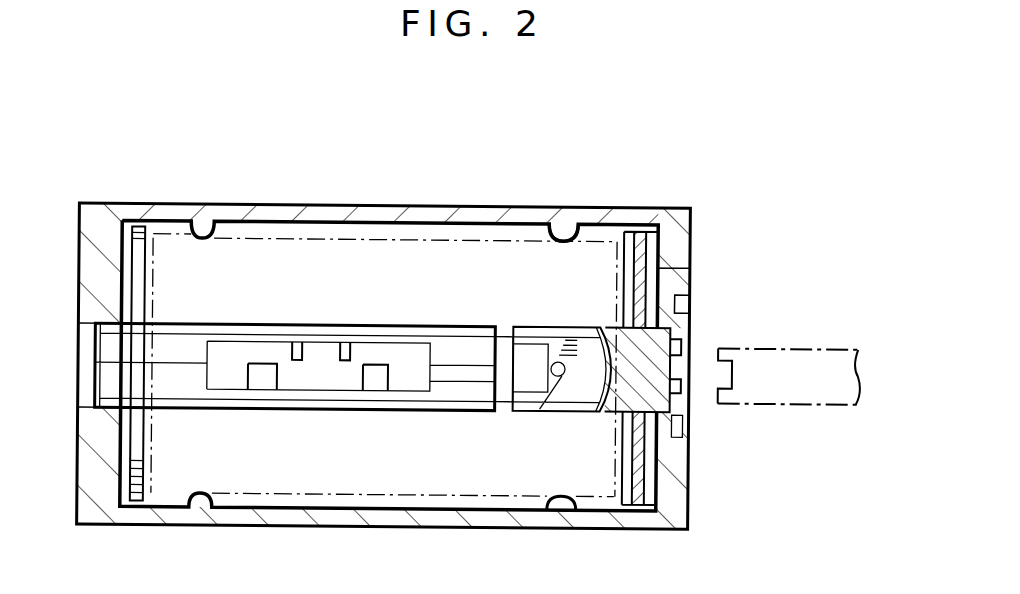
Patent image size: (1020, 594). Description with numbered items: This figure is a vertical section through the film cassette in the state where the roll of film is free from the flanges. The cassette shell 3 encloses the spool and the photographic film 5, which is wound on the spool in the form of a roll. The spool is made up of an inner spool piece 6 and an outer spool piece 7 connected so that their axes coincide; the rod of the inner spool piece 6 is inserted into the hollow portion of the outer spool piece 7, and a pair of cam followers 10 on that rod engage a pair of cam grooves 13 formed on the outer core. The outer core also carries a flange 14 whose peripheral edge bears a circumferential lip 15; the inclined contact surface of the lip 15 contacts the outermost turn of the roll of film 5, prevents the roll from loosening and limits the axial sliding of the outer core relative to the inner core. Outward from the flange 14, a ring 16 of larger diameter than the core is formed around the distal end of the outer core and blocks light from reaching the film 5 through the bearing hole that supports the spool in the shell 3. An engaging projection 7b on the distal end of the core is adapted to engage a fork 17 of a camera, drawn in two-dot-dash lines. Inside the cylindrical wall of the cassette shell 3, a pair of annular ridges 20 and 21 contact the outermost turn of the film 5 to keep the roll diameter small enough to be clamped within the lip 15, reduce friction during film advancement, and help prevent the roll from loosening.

The cassette shell 3 is at (452, 190).
The photographic film 5 is at (318, 233).
The inner spool piece 6 is at (317, 420).
The outer spool piece 7 is at (568, 420).
The engaging projection 7b is at (683, 345).
The cam followers 10 is at (556, 373).
The cam grooves 13 is at (570, 330).
The flange 14 is at (683, 263).
The lip 15 is at (637, 227).
The ring 16 is at (689, 305).
The fork 17 is at (760, 393).
The annular ridge 20 is at (206, 220).
The annular ridge 21 is at (570, 222).